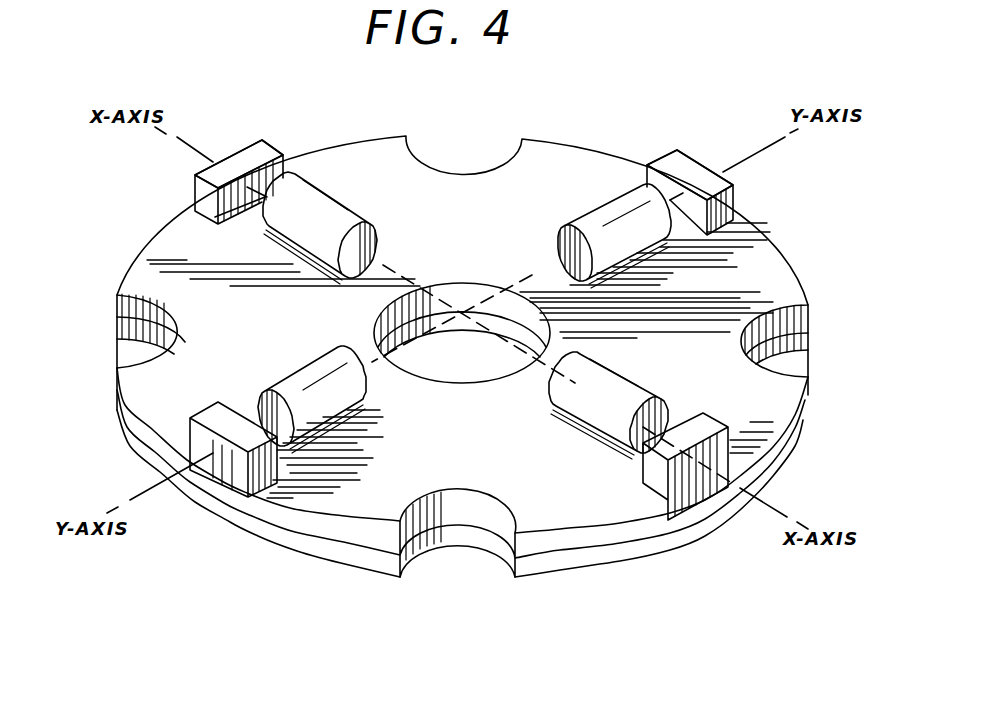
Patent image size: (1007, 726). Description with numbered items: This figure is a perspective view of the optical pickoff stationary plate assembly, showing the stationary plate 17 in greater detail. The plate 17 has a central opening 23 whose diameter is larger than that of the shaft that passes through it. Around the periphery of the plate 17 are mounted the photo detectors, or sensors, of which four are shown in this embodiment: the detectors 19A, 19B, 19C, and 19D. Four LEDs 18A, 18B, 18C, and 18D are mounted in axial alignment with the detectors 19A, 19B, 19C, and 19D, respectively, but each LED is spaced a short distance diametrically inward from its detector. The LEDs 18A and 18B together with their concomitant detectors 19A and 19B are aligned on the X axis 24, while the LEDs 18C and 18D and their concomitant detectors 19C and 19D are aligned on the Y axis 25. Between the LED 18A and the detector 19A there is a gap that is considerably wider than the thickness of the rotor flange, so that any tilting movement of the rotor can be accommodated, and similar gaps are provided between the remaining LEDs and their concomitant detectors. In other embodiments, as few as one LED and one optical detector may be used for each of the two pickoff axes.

The stationary plate 17 is at (788, 257).
The LED 18A is at (331, 199).
The LED 18B is at (564, 412).
The LED 18C is at (314, 372).
The LED 18D is at (604, 210).
The photo detector 19A is at (281, 153).
The photo detector 19B is at (722, 377).
The photo detector 19C is at (191, 416).
The photo detector 19D is at (676, 152).
The central opening 23 is at (447, 331).
The X axis 24 is at (204, 158).
The Y axis 25 is at (741, 165).